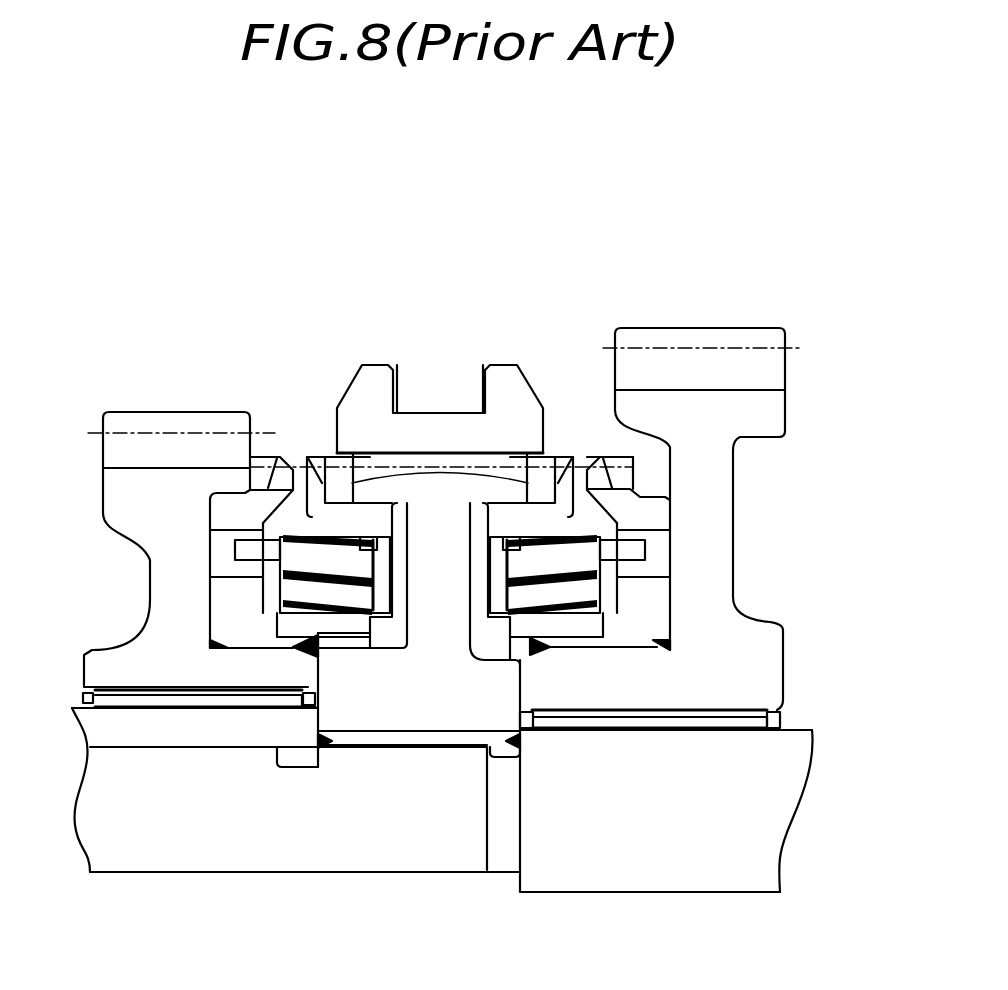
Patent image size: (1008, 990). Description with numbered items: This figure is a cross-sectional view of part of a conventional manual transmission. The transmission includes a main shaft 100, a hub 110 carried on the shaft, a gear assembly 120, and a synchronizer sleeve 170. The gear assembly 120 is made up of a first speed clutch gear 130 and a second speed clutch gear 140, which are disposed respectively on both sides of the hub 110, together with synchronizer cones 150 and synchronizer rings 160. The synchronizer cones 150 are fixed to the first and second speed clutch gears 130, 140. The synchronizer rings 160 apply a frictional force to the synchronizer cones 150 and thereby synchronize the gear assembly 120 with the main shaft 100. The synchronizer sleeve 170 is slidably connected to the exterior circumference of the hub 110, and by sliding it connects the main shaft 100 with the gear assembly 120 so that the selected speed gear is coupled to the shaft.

The main shaft 100 is at (748, 780).
The hub 110 is at (427, 697).
The gear assembly 120 is at (268, 428).
The first speed clutch gear 130 is at (647, 612).
The second speed clutch gear 140 is at (232, 607).
The synchronizer cone 150 is at (547, 557).
The synchronizer ring 160 is at (380, 520).
The synchronizer sleeve 170 is at (497, 373).